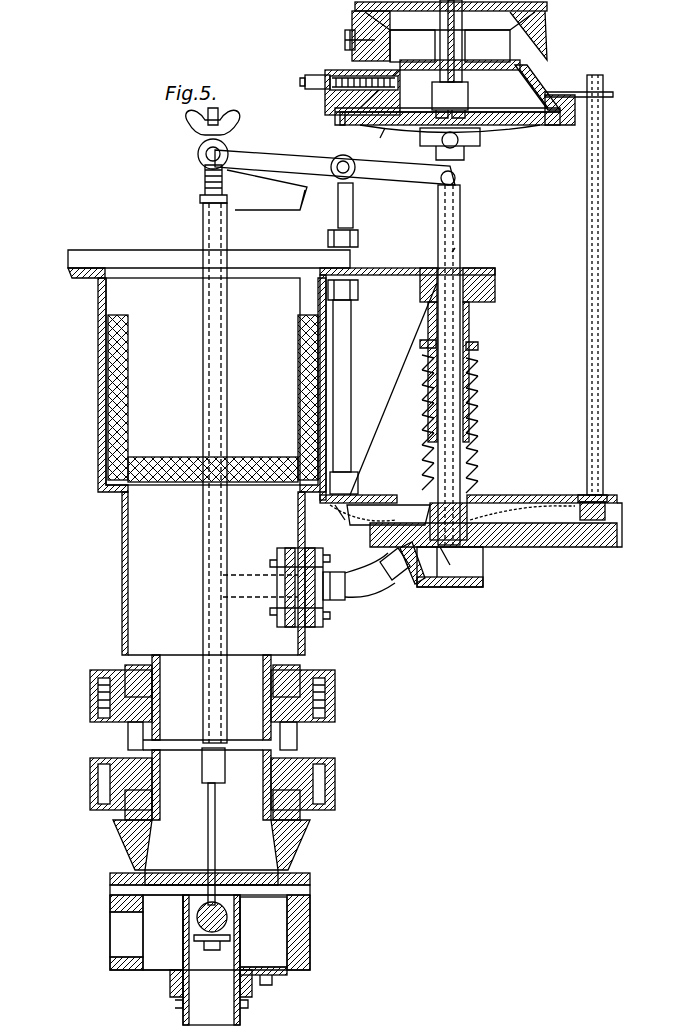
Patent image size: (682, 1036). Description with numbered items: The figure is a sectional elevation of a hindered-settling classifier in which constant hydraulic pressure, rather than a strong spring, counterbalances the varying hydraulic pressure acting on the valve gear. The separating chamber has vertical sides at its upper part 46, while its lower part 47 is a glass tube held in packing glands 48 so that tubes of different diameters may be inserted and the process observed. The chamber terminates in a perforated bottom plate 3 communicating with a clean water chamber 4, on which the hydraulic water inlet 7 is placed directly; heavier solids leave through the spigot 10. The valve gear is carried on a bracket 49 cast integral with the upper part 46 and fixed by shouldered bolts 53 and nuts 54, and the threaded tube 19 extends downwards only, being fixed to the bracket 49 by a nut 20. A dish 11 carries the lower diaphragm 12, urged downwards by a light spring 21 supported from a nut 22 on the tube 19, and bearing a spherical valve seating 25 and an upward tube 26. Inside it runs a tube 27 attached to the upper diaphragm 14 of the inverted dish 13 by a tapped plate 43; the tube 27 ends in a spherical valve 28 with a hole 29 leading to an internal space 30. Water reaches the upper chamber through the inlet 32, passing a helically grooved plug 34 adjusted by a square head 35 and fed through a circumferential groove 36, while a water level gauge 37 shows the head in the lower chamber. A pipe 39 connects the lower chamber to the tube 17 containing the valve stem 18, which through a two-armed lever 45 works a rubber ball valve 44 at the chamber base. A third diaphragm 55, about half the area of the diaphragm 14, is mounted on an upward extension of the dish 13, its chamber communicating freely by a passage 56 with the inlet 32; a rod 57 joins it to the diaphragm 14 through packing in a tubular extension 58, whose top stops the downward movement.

The perforated bottom plate 3 is at (278, 895).
The clean water chamber 4 is at (270, 955).
The pipe spigot 7 is at (110, 938).
The spigot 10 is at (215, 1000).
The dish 11 is at (505, 550).
The lower diaphragm 12 is at (512, 505).
The inverted dish 13 is at (535, 86).
The upper diaphragm 14 is at (535, 128).
The tube 17 is at (240, 412).
The valve stem 18 is at (210, 190).
The threaded tube 19 is at (470, 322).
The nut 20 is at (420, 288).
The light spring 21 is at (478, 400).
The nut 22 is at (478, 350).
The spherical valve seating 25 is at (382, 520).
The tube 26 is at (462, 212).
The tube 27 is at (460, 252).
The spherical valve 28 is at (467, 530).
The hole 29 is at (418, 585).
The internal space 30 is at (450, 567).
The water inlet 32 is at (345, 42).
The plug 34 is at (447, 131).
The square head 35 is at (300, 80).
The circumferential groove 36 is at (325, 112).
The water level gauge 37 is at (587, 360).
The pipe 39 is at (365, 588).
The tapped plate 43 is at (478, 140).
The rubber ball valve 44 is at (227, 920).
The two-armed lever 45 is at (385, 172).
The upper part 46 is at (122, 566).
The lower part 47 is at (130, 735).
The packing glands 48 is at (120, 655).
The bracket 49 is at (405, 268).
The shouldered bolts 53 is at (345, 222).
The nuts 54 is at (358, 240).
The third diaphragm 55 is at (500, 32).
The passage 56 is at (449, 32).
The rod 57 is at (464, 70).
The tubular extension 58 is at (425, 60).